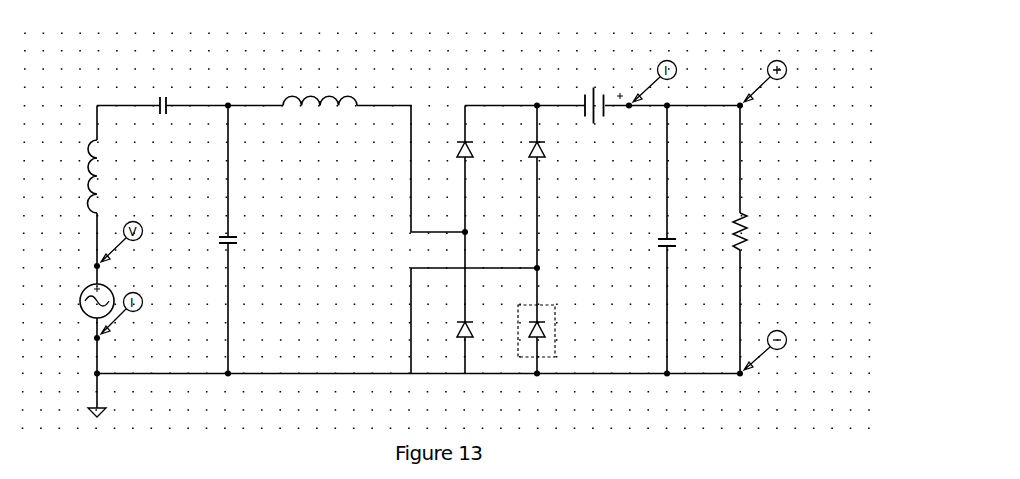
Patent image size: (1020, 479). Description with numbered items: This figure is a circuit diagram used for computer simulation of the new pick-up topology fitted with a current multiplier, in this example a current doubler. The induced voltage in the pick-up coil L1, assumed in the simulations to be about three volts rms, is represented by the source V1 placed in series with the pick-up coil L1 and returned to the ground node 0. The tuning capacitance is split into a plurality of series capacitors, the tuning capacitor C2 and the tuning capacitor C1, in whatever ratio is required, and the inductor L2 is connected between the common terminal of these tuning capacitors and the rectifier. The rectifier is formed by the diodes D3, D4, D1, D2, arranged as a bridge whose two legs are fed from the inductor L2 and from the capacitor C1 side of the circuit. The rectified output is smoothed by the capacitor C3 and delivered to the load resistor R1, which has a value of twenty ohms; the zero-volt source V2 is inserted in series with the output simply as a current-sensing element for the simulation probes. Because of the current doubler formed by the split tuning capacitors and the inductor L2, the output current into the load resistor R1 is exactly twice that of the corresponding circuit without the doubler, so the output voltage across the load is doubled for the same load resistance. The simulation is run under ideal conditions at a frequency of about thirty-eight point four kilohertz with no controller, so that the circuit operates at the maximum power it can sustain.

The pick-up coil L1 is at (90, 176).
The tuning capacitor C2 is at (182, 100).
The inductor L2 is at (320, 104).
The tuning capacitor C1 is at (195, 245).
The AC voltage source V1 is at (101, 295).
The diode D1 (1N6392) D1 is at (450, 351).
The diode D2 (1N6392) D2 is at (532, 351).
The diode D3 (1N6392) D3 is at (435, 153).
The diode D4 (1N6392) D4 is at (551, 153).
The DC voltage source V2 (0V) V2 is at (602, 93).
The capacitor C3 (10uF) C3 is at (643, 248).
The load resistor R1 is at (739, 231).
The ground node 0 is at (98, 420).